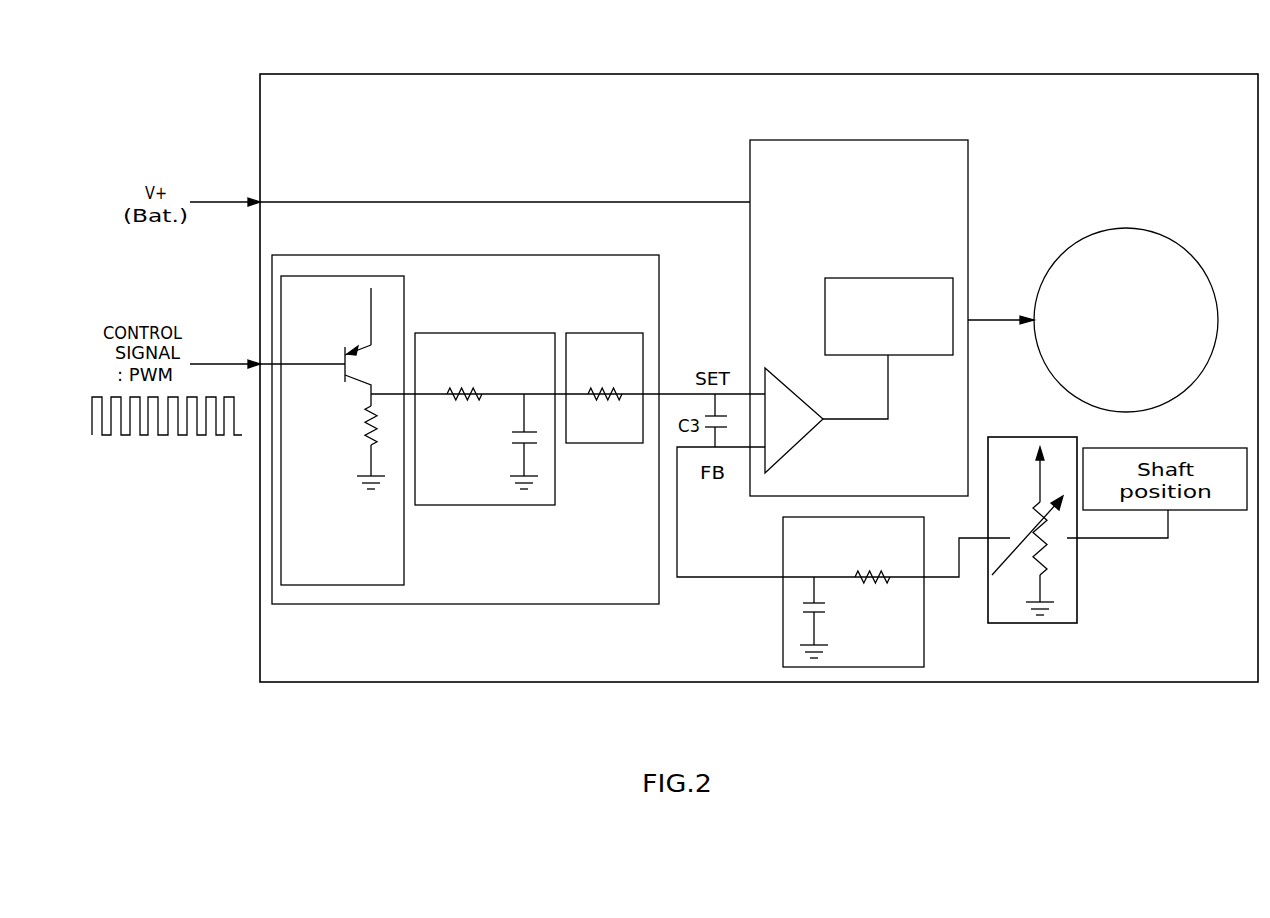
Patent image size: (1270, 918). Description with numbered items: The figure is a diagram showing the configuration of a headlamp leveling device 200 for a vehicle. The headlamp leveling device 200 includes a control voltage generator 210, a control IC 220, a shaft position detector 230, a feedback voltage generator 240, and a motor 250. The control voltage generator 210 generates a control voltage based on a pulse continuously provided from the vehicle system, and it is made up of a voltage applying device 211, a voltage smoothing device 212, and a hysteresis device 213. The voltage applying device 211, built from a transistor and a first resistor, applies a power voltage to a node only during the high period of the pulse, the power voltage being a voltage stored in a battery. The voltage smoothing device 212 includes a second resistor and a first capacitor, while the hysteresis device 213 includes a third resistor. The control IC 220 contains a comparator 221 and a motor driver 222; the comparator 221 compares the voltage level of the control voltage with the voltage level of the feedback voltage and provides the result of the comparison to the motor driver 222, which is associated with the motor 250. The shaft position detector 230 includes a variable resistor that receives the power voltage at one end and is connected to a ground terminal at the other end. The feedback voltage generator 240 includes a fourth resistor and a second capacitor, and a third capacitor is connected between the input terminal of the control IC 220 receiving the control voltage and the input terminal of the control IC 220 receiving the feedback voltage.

The headlamp leveling device 200 is at (732, 74).
The control voltage generator 210 is at (564, 255).
The voltage applying device 211 is at (405, 288).
The voltage smoothing device 212 is at (458, 333).
The hysteresis device 213 is at (572, 333).
The control IC 220 is at (857, 140).
The comparator 221 is at (800, 391).
The motor driver 222 is at (873, 278).
The shaft position detector 230 is at (1080, 596).
The feedback voltage generator 240 is at (925, 650).
The motor 250 is at (1114, 227).